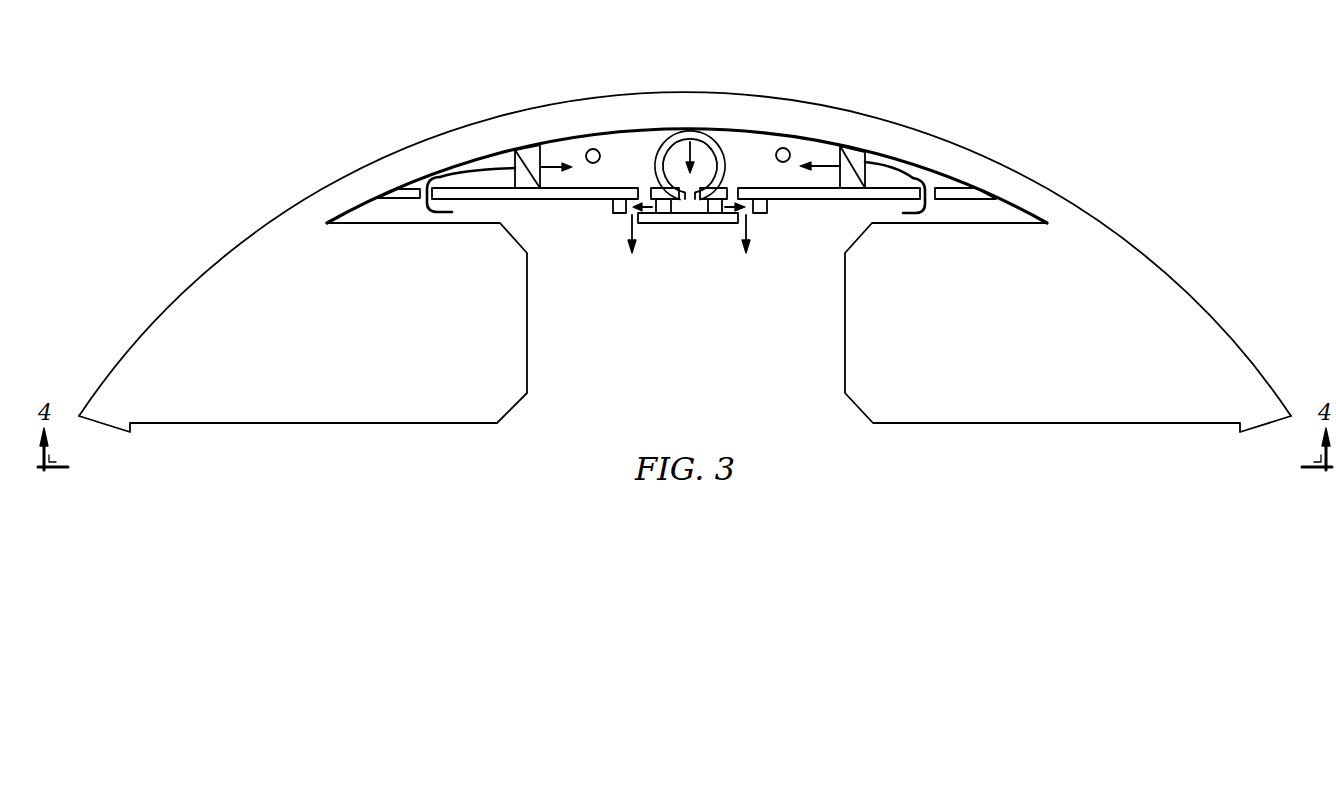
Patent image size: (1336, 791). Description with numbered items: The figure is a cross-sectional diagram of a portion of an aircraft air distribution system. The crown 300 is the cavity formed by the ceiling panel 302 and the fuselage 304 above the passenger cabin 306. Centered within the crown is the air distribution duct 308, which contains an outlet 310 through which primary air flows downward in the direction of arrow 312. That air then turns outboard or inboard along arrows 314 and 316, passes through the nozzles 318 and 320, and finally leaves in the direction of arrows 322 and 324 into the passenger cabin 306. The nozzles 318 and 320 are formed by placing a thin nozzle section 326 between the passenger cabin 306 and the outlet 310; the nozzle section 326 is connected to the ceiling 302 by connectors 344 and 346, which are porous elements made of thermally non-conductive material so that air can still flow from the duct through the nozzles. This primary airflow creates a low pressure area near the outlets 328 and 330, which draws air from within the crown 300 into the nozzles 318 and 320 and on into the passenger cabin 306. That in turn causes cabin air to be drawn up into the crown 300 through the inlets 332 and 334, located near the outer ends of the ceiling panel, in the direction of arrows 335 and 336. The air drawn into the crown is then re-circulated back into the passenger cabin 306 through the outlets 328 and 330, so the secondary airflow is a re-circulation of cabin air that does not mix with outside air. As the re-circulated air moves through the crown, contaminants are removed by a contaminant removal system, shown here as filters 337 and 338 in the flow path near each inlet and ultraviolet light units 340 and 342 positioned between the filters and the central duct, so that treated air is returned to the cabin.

The crown 300 is at (815, 143).
The ceiling panel 302 is at (957, 190).
The fuselage 304 is at (1050, 190).
The passenger cabin 306 is at (668, 407).
The air distribution duct 308 is at (720, 145).
The outlet 310 is at (654, 143).
The arrow 312 is at (688, 140).
The arrow 314 is at (649, 213).
The arrow 316 is at (737, 215).
The nozzle 318 is at (634, 211).
The nozzle 320 is at (748, 212).
The arrow 322 is at (630, 238).
The arrow 324 is at (750, 238).
The nozzle section 326 is at (700, 223).
The outlet 328 is at (738, 186).
The outlet 330 is at (640, 186).
The inlet 332 is at (416, 199).
The inlet 334 is at (933, 200).
The arrow 335 is at (488, 173).
The arrow 336 is at (905, 215).
The filter 337 is at (513, 155).
The filter 338 is at (878, 156).
The ultraviolet light unit 340 is at (593, 149).
The ultraviolet light unit 342 is at (783, 148).
The connector 344 is at (666, 213).
The connector 346 is at (714, 213).